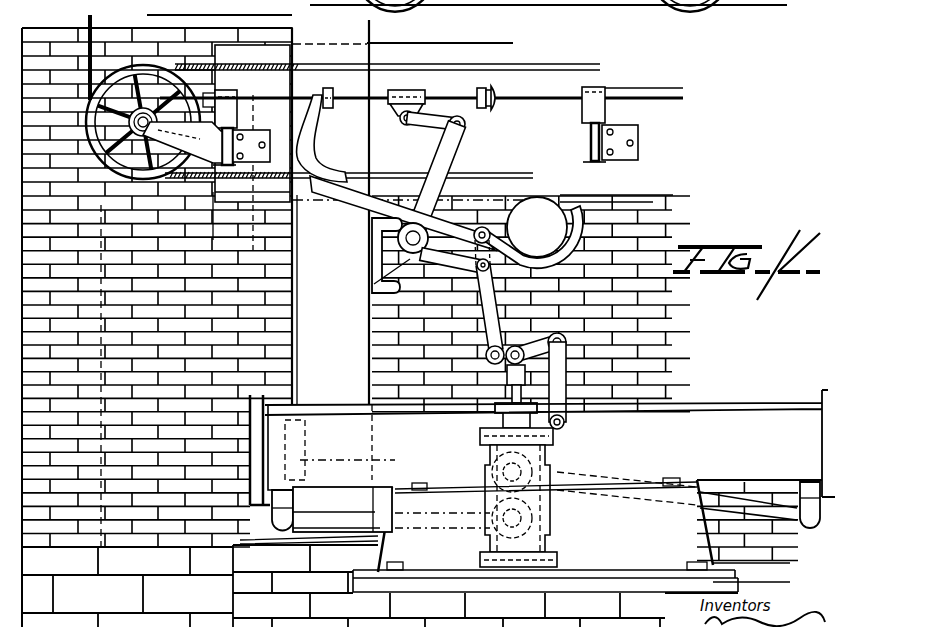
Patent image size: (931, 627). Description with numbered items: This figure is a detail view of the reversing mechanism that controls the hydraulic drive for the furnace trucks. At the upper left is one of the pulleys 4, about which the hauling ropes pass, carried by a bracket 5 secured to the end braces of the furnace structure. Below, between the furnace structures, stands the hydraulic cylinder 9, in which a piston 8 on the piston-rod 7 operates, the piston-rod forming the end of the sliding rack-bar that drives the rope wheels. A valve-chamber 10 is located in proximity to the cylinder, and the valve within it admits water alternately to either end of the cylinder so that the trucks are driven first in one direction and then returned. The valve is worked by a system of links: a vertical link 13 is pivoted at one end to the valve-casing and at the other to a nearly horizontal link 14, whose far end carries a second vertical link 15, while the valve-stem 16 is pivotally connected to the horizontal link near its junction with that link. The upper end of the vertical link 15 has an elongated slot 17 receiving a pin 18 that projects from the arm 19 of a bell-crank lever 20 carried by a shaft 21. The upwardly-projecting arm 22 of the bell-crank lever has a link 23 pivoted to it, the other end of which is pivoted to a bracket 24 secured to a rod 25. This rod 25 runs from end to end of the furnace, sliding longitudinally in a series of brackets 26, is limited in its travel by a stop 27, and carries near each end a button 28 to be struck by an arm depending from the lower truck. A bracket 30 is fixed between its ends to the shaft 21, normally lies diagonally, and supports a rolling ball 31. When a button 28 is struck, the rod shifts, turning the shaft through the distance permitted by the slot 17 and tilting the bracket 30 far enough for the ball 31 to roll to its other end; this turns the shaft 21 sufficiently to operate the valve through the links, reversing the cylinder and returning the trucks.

The pulley 4 is at (131, 64).
The bracket 5 is at (182, 142).
The piston-rod 7 is at (347, 442).
The piston 8 is at (307, 444).
The hydraulic cylinder 9 is at (550, 481).
The valve-chamber 10 is at (560, 429).
The vertical link 13 is at (559, 382).
The horizontal link 14 is at (548, 342).
The vertical link 15 is at (481, 295).
The valve-stem 16 is at (512, 393).
The elongated slot 17 is at (478, 268).
The pin 18 is at (503, 268).
The arm 19 is at (453, 261).
The bell-crank lever 20 is at (455, 202).
The shaft 21 is at (400, 255).
The upwardly-projecting arm 22 is at (452, 150).
The link 23 is at (435, 132).
The bracket 24 is at (406, 98).
The rod 25 is at (421, 85).
The bracket 26 is at (600, 72).
The stop 27 is at (339, 91).
The button 28 is at (499, 107).
The bracket 30 is at (307, 133).
The rolling ball 31 is at (537, 227).